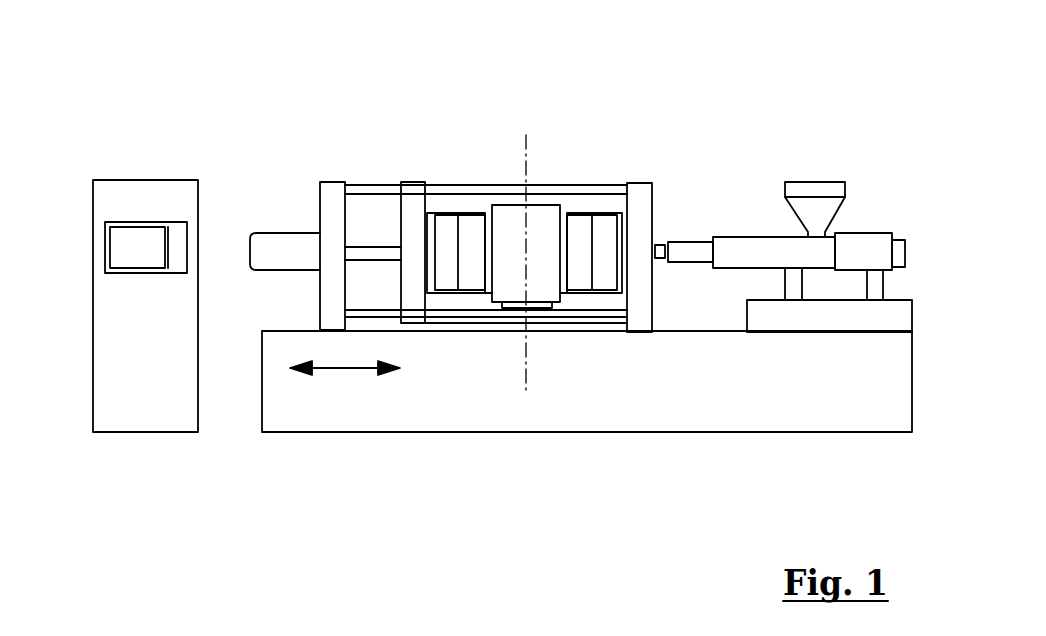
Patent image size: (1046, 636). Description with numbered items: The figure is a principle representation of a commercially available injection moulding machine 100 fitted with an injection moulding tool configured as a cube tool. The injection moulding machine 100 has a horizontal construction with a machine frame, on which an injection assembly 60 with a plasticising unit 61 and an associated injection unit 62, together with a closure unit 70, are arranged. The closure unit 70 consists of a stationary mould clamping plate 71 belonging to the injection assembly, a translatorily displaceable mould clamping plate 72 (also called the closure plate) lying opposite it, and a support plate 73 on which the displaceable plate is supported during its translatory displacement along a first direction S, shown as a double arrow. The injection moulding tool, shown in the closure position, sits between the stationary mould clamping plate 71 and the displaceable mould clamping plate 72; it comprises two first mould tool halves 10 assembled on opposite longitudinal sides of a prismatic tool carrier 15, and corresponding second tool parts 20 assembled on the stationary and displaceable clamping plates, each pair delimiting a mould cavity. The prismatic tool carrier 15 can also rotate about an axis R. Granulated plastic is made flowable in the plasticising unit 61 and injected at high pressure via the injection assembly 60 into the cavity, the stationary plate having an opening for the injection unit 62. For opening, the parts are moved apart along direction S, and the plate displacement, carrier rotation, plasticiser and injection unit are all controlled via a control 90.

The injection moulding machine 100 is at (502, 284).
The control 90 is at (125, 193).
The closure unit 70 is at (431, 166).
The stationary mould clamping plate 71 is at (642, 185).
The translatorily displaceable mould clamping plate 72 is at (413, 193).
The support plate 73 is at (333, 183).
The prismatic tool carrier 15 is at (507, 220).
The rotation axis R is at (527, 170).
The first direction S is at (343, 370).
The first mould tool half 10 is at (578, 277).
The second tool part 20 is at (603, 277).
The injection assembly 60 is at (799, 173).
The plasticising unit 61 is at (820, 250).
The injection unit 62 is at (658, 243).